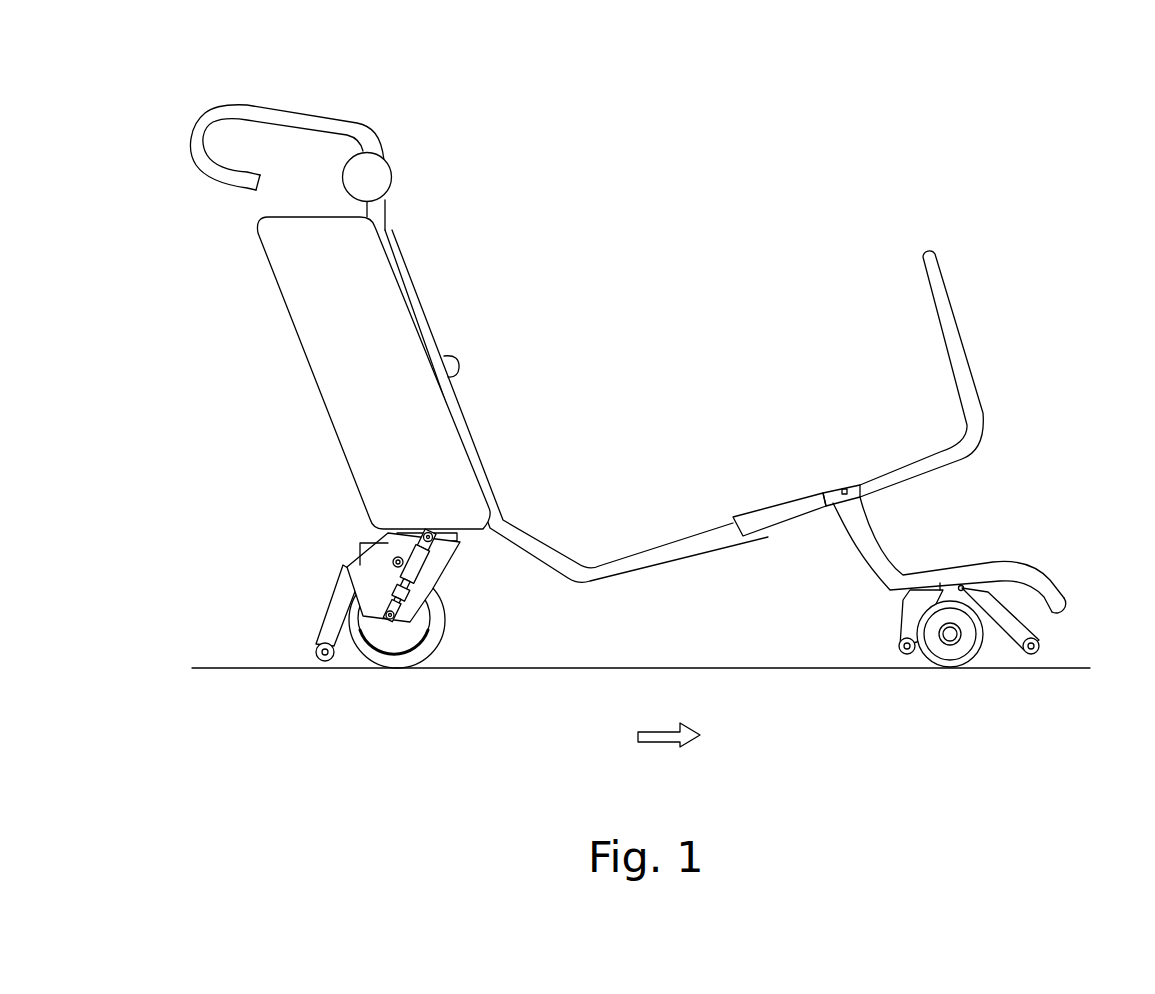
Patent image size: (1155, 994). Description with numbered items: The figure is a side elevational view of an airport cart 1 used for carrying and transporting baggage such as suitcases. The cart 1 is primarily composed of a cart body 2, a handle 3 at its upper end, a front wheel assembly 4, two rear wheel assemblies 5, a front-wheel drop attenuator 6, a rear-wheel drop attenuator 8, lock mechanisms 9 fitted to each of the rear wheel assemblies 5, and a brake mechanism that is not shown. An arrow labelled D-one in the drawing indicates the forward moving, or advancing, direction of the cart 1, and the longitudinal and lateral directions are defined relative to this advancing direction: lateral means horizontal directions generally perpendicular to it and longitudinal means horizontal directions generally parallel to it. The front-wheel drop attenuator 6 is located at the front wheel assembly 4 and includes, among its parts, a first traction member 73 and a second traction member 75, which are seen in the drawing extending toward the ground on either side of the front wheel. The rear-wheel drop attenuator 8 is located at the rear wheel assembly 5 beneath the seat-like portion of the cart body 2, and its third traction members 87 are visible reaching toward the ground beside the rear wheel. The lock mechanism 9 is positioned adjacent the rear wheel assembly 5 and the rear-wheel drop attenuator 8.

The cart 1 is at (666, 385).
The cart body 2 is at (677, 537).
The handle 3 is at (281, 112).
The front wheel assembly 4 is at (982, 653).
The rear wheel assemblies 5 is at (441, 639).
The front-wheel drop attenuator 6 is at (870, 612).
The first traction member 73 is at (900, 643).
The second traction member 75 is at (1040, 640).
The rear-wheel drop attenuator 8 is at (431, 570).
The third traction members 87 is at (317, 647).
The lock mechanisms 9 is at (368, 518).